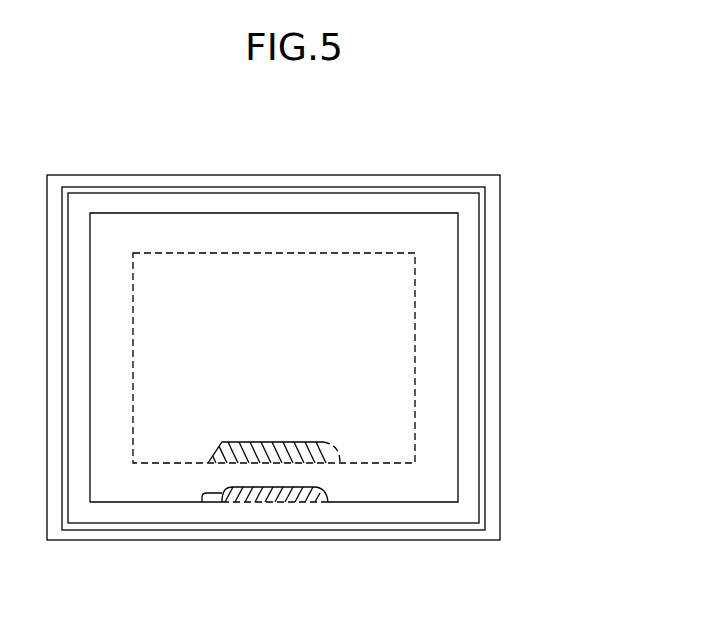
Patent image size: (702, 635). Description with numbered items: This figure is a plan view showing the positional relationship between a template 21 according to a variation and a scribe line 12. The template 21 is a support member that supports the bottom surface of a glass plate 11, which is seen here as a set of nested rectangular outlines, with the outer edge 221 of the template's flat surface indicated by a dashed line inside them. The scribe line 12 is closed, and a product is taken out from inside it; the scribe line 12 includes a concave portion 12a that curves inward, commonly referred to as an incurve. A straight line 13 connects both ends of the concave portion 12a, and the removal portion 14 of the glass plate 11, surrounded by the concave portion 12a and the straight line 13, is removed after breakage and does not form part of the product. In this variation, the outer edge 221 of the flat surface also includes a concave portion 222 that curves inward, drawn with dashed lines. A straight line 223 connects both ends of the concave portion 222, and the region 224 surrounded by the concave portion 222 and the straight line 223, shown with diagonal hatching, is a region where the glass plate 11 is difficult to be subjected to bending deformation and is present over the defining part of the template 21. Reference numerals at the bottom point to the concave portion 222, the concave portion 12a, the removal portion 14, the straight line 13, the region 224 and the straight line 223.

The template 21 is at (142, 167).
The glass plate 11 is at (472, 303).
The scribe line 12 is at (457, 340).
The concave portion 12a is at (203, 502).
The straight line 13 is at (305, 492).
The removal portion 14 is at (262, 502).
The outer edge 221 is at (255, 253).
The concave portion 222 is at (212, 452).
The straight line 223 is at (340, 463).
The region 224 is at (327, 443).